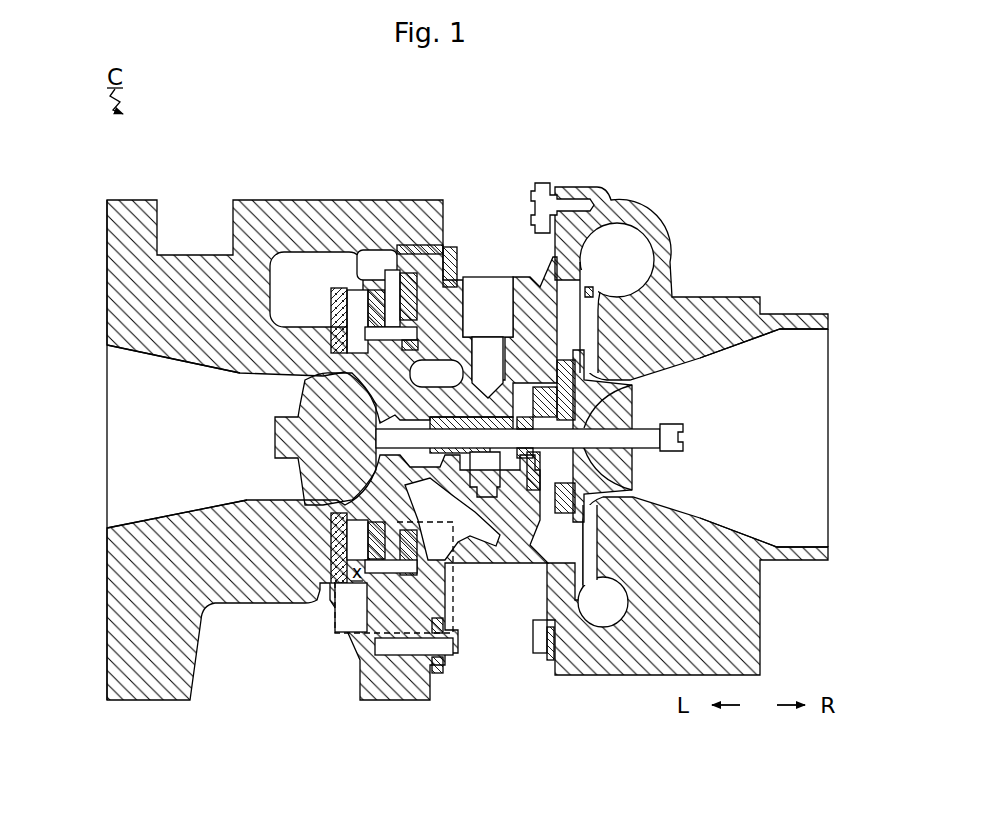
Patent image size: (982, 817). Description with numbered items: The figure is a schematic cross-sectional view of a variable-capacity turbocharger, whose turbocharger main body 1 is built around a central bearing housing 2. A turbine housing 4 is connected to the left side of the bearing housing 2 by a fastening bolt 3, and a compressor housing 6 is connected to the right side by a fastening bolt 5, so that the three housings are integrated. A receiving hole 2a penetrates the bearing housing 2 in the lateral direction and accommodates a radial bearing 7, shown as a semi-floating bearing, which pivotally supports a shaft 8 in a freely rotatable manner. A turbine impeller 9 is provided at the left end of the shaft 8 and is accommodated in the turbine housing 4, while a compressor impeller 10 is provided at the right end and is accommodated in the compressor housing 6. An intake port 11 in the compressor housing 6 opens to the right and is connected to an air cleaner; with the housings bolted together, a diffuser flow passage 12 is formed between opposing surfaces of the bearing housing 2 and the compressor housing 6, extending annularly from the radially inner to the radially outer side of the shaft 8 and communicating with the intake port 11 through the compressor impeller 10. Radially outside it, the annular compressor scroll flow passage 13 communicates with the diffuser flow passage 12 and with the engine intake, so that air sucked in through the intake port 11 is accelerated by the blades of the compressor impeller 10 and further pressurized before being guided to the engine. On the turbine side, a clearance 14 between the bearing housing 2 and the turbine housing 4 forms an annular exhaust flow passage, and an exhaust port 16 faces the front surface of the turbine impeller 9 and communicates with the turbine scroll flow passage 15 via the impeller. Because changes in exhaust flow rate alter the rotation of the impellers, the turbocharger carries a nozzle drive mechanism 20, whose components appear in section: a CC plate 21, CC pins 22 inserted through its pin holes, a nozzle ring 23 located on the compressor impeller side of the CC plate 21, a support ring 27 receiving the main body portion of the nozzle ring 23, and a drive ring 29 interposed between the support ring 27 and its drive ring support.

The turbocharger main body 1 is at (162, 144).
The bearing housing 2 is at (530, 277).
The receiving hole 2a is at (448, 383).
The fastening bolt 3 is at (450, 655).
The turbine housing 4 is at (243, 200).
The fastening bolt 5 is at (541, 180).
The compressor housing 6 is at (790, 350).
The radial bearing 7 is at (433, 480).
The shaft 8 is at (493, 430).
The turbine impeller 9 is at (300, 487).
The compressor impeller 10 is at (635, 397).
The intake port 11 is at (790, 350).
The diffuser flow passage 12 is at (578, 330).
The compressor scroll flow passage 13 is at (582, 273).
The clearance 14 is at (333, 583).
The turbine scroll flow passage 15 is at (279, 301).
The exhaust port 16 is at (160, 350).
The nozzle drive mechanism 20 is at (350, 274).
The CC plate 21 is at (333, 620).
The CC pin 22 is at (363, 272).
The nozzle ring 23 is at (367, 632).
The support ring 27 is at (385, 270).
The drive ring 29 is at (420, 245).